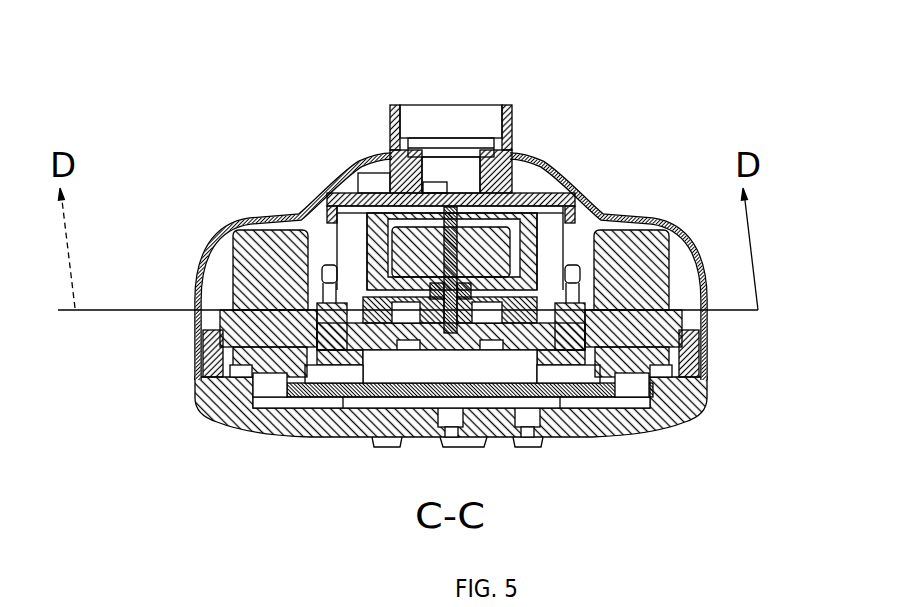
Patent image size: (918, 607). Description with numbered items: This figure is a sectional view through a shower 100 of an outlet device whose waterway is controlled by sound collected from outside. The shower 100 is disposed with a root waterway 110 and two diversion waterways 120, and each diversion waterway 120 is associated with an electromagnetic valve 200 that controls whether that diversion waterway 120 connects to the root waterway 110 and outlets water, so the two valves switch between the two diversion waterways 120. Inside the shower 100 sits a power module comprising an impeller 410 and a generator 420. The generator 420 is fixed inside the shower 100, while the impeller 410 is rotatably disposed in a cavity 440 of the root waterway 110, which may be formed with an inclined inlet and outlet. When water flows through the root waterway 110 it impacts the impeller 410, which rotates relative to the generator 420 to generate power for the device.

The shower 100 is at (170, 382).
The root waterway 110 is at (462, 127).
The diversion waterway 120 is at (268, 383).
The electromagnetic valve 200 is at (257, 263).
The impeller 410 is at (403, 315).
The generator 420 is at (455, 222).
The cavity 440 is at (493, 297).